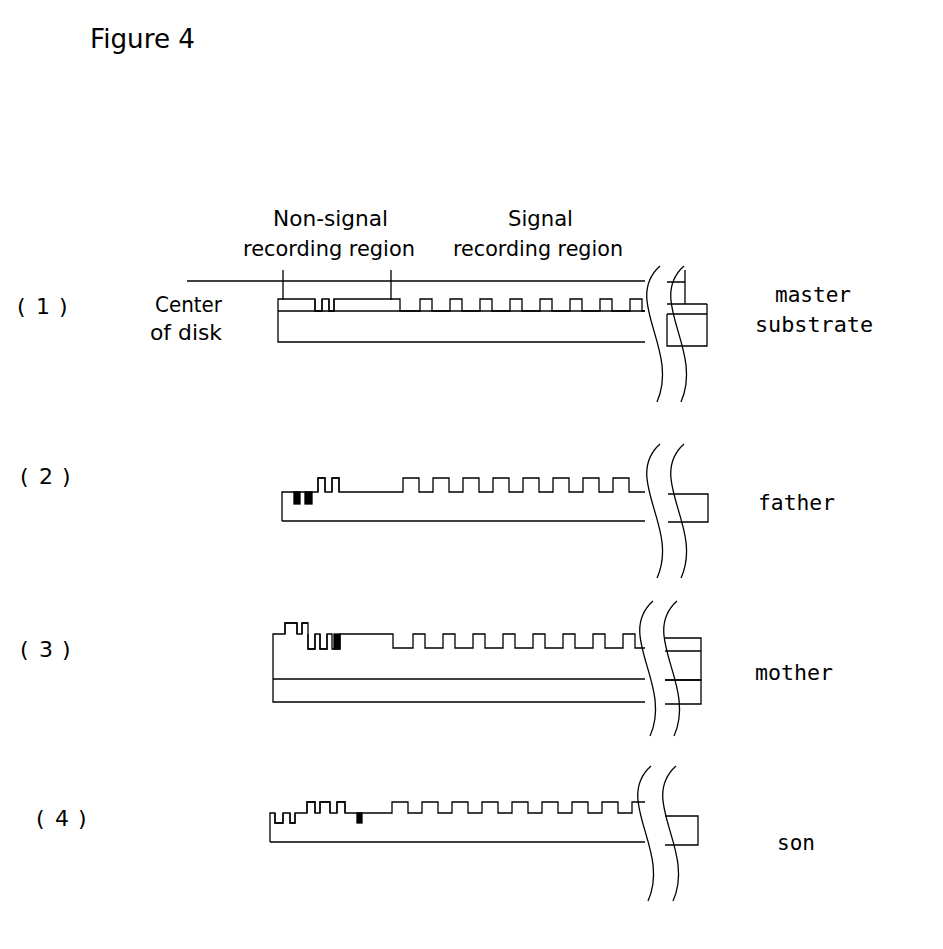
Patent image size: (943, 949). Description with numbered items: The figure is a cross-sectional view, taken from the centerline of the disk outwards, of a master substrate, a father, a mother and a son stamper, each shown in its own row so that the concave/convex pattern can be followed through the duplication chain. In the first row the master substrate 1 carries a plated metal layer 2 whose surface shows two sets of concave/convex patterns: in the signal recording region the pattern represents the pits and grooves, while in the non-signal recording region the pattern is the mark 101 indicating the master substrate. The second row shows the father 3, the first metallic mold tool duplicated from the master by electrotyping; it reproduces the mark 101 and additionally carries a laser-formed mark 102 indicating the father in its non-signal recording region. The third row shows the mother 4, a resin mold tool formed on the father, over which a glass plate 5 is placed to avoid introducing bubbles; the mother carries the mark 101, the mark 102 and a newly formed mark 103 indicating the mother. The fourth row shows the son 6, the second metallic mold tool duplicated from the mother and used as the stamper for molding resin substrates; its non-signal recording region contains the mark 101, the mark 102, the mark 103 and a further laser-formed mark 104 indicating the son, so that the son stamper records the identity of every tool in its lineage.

The master substrate 1 is at (695, 333).
The metal layer 2 is at (697, 305).
The father 3 is at (693, 512).
The mother 4 is at (695, 655).
The glass plate 5 is at (690, 695).
The son 6 is at (697, 816).
The mark indicating the master substrate 101 is at (320, 324).
The mark indicating the father stamper 102 is at (304, 472).
The mark indicating the mother stamper 103 is at (345, 618).
The mark indicating the son stamper 104 is at (362, 840).